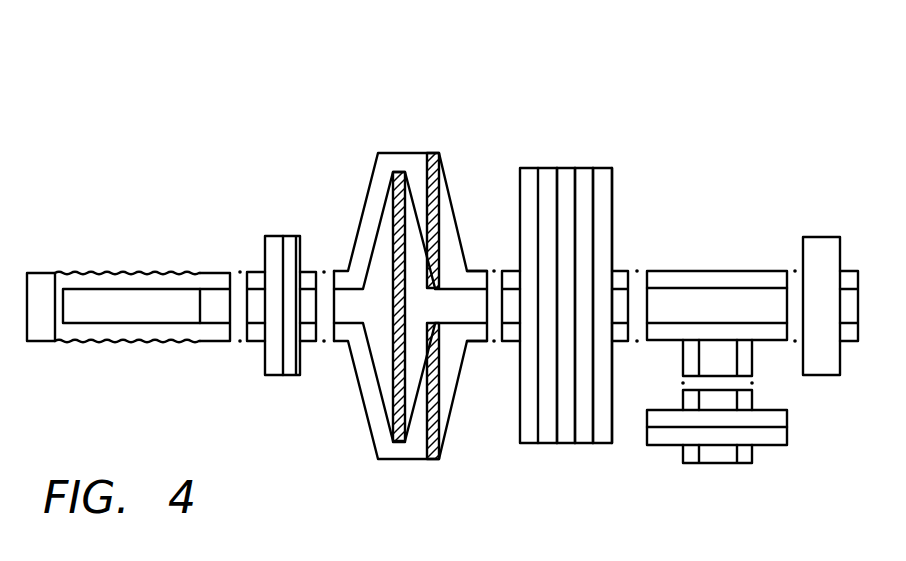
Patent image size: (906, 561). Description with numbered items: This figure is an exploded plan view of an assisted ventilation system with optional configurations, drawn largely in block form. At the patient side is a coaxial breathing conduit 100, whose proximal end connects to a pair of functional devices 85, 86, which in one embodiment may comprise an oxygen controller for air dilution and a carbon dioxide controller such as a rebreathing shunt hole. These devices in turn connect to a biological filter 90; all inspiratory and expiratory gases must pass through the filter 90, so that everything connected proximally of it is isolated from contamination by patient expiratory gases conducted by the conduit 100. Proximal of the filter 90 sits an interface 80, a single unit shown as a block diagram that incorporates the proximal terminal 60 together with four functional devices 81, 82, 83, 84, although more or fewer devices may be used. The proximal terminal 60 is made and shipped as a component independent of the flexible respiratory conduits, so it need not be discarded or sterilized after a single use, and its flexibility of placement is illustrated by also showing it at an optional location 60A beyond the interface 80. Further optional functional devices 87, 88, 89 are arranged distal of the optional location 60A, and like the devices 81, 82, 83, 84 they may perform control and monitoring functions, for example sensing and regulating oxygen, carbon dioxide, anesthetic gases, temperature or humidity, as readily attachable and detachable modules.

The coaxial breathing conduit 100 is at (136, 363).
The proximal terminal 60 is at (530, 443).
The optional location 60A is at (673, 271).
The interface 80 is at (579, 277).
The functional device 81 is at (548, 443).
The functional device 82 is at (563, 168).
The functional device 83 is at (585, 443).
The functional device 84 is at (606, 168).
The functional device 85 is at (272, 375).
The functional device 86 is at (290, 375).
The functional device 87 is at (780, 420).
The functional device 88 is at (783, 437).
The functional device 89 is at (823, 247).
The biological filter 90 is at (400, 460).